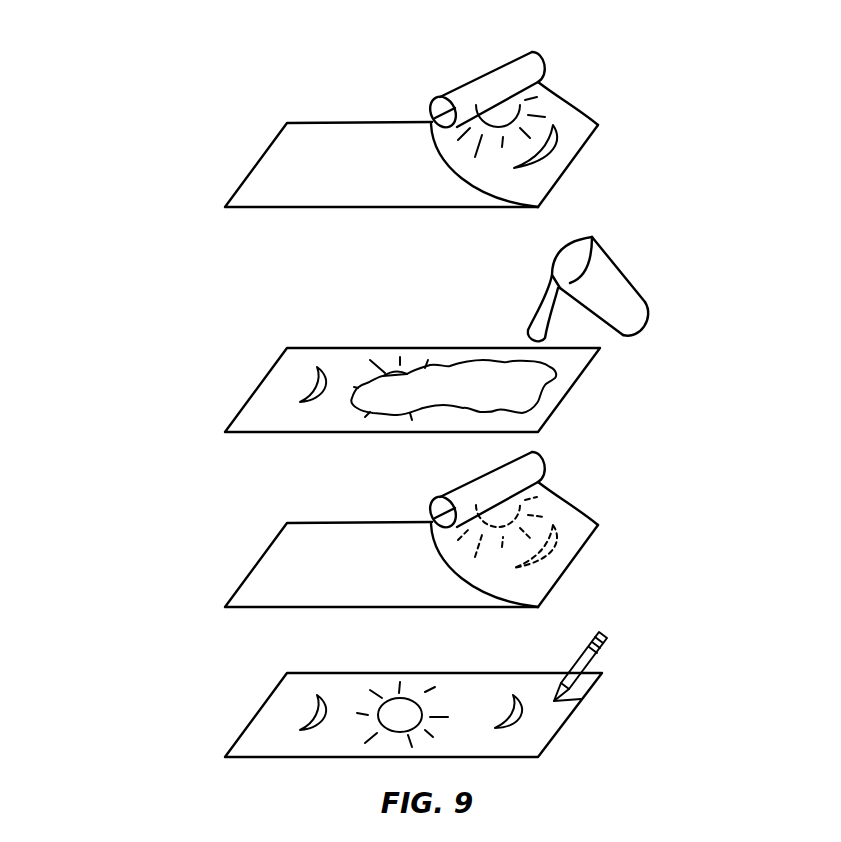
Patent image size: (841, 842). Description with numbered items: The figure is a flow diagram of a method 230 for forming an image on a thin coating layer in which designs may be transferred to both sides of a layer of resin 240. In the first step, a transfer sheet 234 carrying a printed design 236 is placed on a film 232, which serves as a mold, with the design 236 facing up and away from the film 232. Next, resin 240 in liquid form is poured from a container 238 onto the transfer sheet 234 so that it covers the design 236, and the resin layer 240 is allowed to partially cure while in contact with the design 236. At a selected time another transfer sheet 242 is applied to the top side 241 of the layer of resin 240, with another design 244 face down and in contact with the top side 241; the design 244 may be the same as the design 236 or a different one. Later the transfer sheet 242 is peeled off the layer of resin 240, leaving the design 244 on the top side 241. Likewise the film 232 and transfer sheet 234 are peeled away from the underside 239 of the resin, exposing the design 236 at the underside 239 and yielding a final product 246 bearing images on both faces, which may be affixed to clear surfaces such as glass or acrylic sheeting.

The method 230 is at (168, 70).
The film 232 is at (254, 163).
The transfer sheet 234 is at (598, 145).
The design 236 is at (530, 104).
The container 238 is at (625, 283).
The underside 239 is at (298, 363).
The resin 240 is at (548, 378).
The top side 241 is at (322, 525).
The transfer sheet 242 is at (598, 544).
The design 244 is at (530, 505).
The final product 246 is at (224, 708).